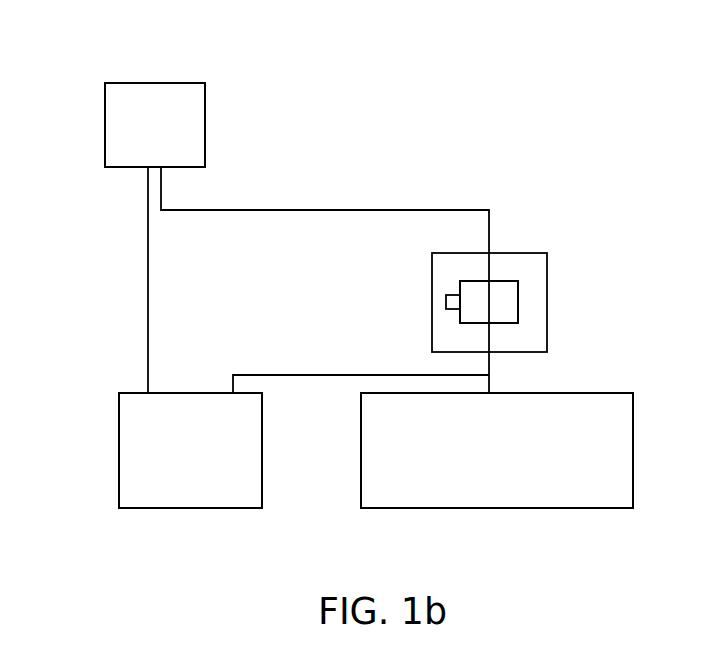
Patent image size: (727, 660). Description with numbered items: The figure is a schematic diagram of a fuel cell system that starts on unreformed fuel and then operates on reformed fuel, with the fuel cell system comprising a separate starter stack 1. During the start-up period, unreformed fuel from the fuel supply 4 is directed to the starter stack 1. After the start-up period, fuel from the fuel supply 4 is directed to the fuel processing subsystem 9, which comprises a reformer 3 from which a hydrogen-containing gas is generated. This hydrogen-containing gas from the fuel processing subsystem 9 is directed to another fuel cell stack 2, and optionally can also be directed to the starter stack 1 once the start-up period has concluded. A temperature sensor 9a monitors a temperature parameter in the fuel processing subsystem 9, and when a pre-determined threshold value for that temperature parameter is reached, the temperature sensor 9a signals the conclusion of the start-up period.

The starter stack 1 is at (135, 433).
The fuel cell stack 2 is at (588, 409).
The reformer 3 is at (502, 302).
The fuel supply 4 is at (169, 97).
The fuel processing subsystem 9 is at (534, 260).
The temperature sensor 9a is at (446, 302).